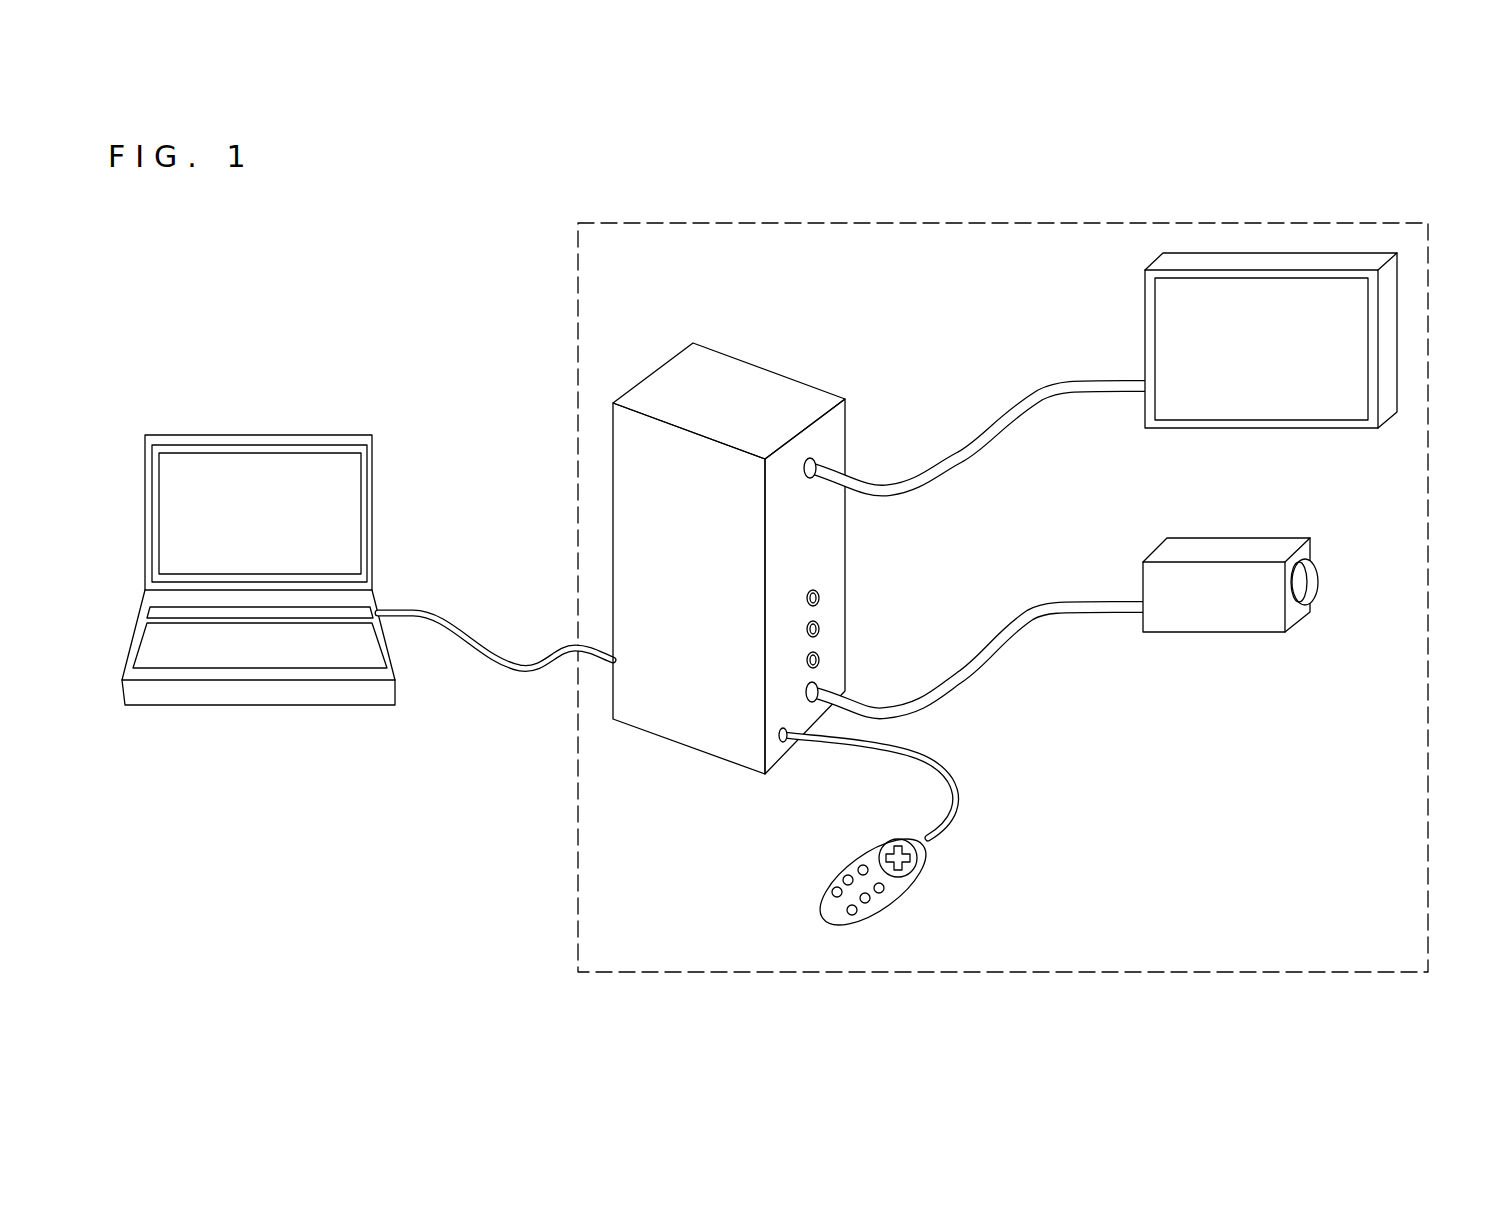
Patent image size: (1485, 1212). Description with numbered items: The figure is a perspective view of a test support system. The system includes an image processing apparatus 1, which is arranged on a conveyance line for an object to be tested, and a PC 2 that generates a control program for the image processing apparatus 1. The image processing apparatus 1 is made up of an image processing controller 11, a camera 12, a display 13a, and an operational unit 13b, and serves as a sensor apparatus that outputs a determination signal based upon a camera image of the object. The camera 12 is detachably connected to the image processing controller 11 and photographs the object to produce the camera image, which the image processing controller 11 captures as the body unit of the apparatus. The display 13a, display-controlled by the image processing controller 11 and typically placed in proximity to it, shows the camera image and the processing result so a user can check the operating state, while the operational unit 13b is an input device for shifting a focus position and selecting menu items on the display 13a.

The image processing apparatus 1 is at (1274, 223).
The PC (personal computer) 2 is at (337, 434).
The image processing controller 11 is at (789, 378).
The camera 12 is at (1278, 538).
The display 13a is at (1360, 255).
The operational unit 13b is at (912, 893).